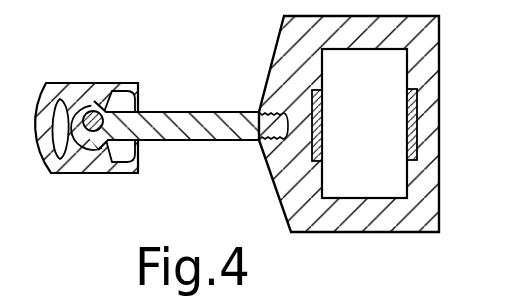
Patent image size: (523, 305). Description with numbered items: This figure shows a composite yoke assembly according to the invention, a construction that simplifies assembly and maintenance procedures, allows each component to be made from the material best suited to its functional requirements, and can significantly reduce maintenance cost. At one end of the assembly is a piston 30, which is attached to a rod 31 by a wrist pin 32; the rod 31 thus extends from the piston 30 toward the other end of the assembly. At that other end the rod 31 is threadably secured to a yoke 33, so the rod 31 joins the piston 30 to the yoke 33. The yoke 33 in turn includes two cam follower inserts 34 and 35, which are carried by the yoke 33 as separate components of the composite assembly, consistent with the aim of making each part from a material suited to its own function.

The piston 30 is at (100, 83).
The rod 31 is at (180, 112).
The wrist pin 32 is at (93, 121).
The yoke 33 is at (437, 15).
The cam follower insert 34 is at (323, 106).
The cam follower insert 35 is at (405, 132).